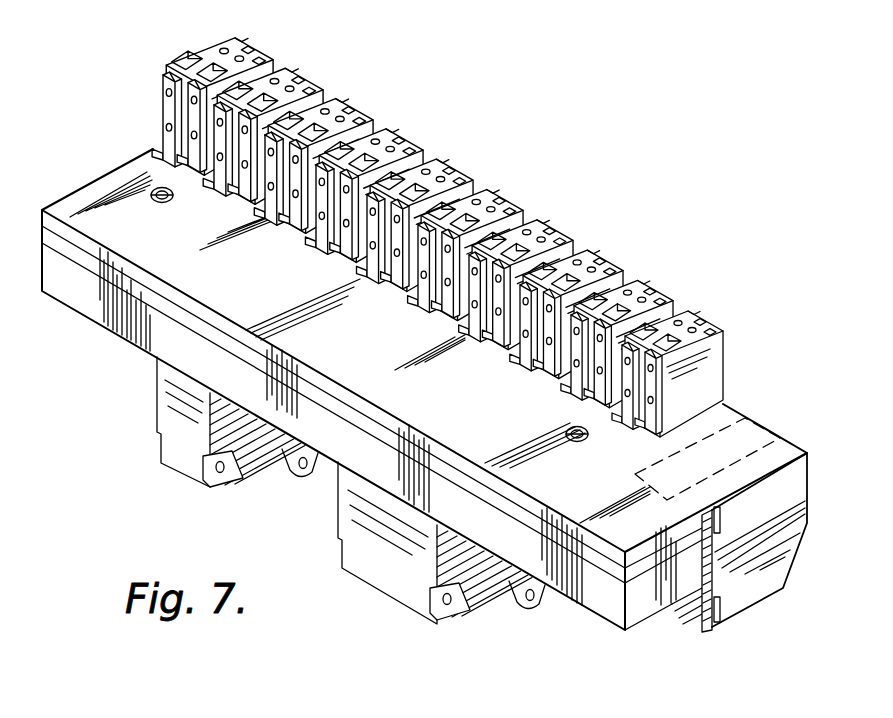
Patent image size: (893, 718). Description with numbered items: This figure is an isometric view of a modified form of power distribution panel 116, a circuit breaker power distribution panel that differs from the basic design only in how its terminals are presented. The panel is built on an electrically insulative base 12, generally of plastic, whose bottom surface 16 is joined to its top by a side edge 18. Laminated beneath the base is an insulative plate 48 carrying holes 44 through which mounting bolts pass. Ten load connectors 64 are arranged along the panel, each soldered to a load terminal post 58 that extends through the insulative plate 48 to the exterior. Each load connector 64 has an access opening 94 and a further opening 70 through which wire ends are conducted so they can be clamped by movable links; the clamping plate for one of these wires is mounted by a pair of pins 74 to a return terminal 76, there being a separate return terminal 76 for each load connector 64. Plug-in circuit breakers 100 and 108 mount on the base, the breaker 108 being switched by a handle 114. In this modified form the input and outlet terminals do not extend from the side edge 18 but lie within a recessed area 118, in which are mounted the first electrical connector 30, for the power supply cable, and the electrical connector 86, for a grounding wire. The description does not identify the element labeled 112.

The electrically insulative base 12 is at (640, 623).
The bottom surface 16 is at (615, 527).
The side edge 18 is at (647, 608).
The first electrical connector 30 is at (798, 521).
The holes 44 is at (176, 200).
The insulative plate 48 is at (210, 287).
The load terminal post 58 is at (580, 392).
The load connector 64 is at (713, 382).
The opening 70 is at (462, 184).
The pins 74 is at (297, 232).
The return terminal 76 is at (540, 372).
The electrical connector 86 is at (774, 432).
The access opening 94 is at (507, 197).
The circuit breaker 100 is at (178, 458).
The circuit breaker 108 is at (398, 585).
The mounting tab 112 is at (306, 478).
The handle 114 is at (518, 608).
The power distribution panel 116 is at (562, 594).
The recessed area 118 is at (702, 568).